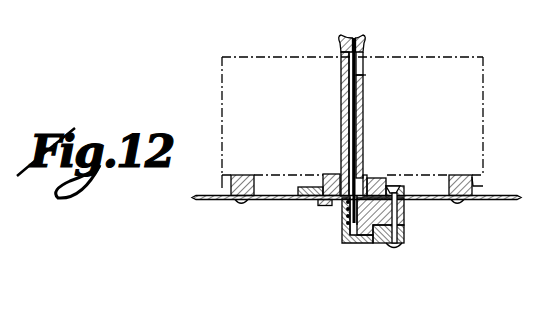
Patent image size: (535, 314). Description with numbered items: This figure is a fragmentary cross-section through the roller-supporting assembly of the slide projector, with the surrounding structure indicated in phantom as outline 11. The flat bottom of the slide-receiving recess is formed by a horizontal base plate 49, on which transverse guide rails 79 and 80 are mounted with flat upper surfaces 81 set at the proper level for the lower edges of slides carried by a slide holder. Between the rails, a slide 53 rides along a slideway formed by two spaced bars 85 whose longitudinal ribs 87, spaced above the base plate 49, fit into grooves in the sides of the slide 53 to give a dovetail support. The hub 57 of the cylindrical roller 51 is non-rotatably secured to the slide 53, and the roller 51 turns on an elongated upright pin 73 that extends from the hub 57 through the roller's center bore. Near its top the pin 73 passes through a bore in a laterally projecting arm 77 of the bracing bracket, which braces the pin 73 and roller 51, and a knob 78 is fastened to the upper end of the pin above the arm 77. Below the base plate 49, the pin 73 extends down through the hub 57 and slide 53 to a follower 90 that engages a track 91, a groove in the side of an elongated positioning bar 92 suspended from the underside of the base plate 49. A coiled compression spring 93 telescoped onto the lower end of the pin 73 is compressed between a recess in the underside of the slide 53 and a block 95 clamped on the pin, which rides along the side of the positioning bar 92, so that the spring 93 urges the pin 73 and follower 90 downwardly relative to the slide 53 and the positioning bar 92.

The phantom outline of housing 11 is at (278, 56).
The base plate 49 is at (229, 202).
The roller 51 is at (364, 100).
The slide 53 is at (328, 204).
The hub 57 is at (367, 173).
The pin 73 is at (358, 125).
The arm 77 is at (365, 68).
The knob 78 is at (366, 38).
The transverse guide rail 79 is at (475, 184).
The transverse guide rail 80 is at (229, 188).
The flat upper surface 81 is at (245, 174).
The bar 85 is at (300, 186).
The longitudinal rib 87 is at (327, 173).
The follower 90 is at (364, 243).
The track 91 is at (404, 217).
The positioning bar 92 is at (406, 232).
The coiled compression spring 93 is at (345, 216).
The block 95 is at (344, 244).